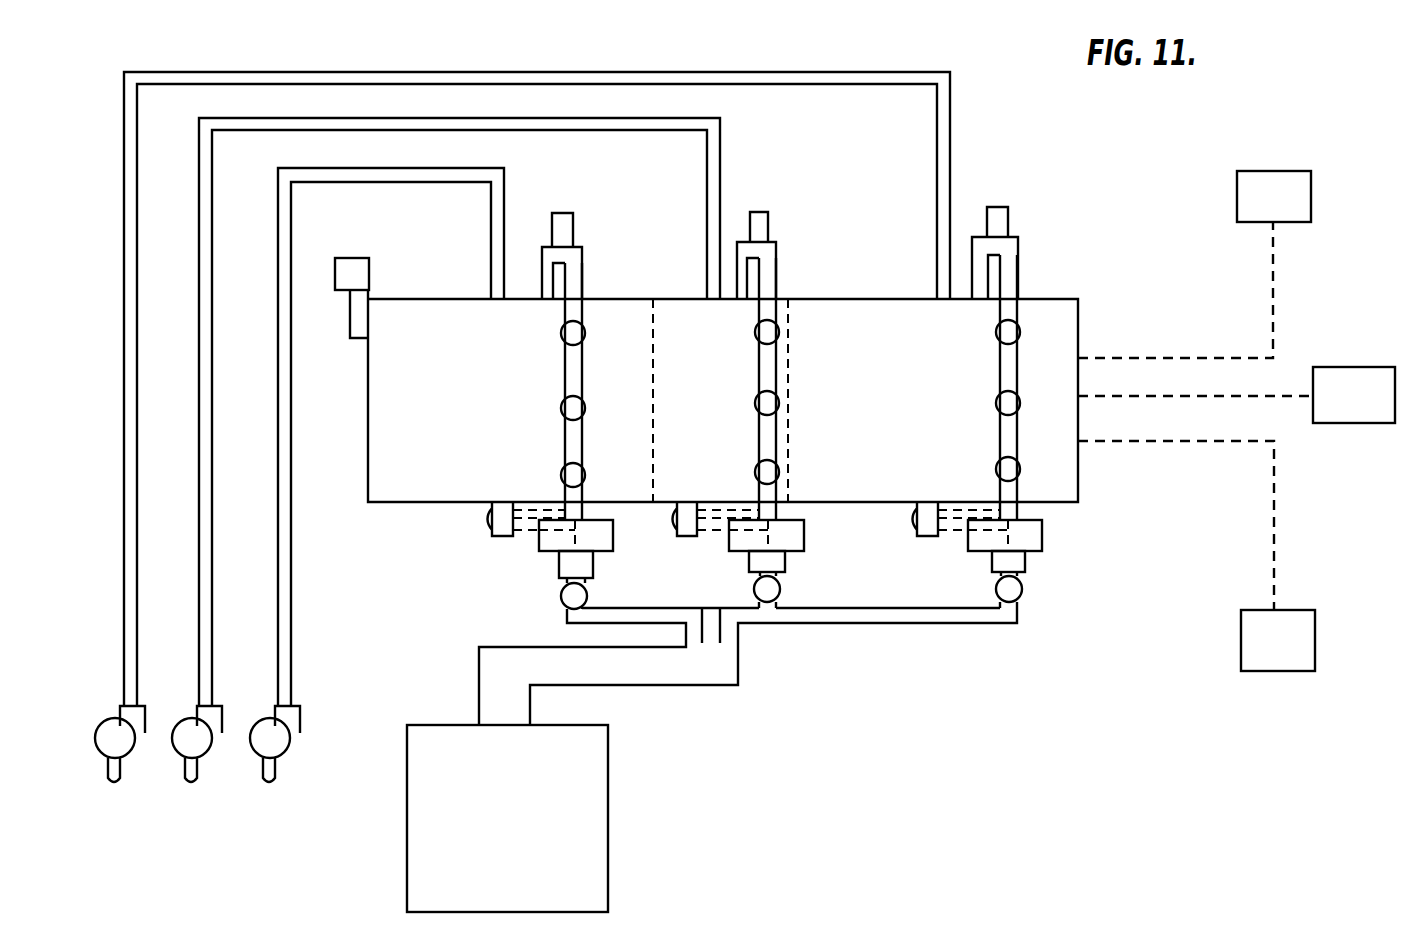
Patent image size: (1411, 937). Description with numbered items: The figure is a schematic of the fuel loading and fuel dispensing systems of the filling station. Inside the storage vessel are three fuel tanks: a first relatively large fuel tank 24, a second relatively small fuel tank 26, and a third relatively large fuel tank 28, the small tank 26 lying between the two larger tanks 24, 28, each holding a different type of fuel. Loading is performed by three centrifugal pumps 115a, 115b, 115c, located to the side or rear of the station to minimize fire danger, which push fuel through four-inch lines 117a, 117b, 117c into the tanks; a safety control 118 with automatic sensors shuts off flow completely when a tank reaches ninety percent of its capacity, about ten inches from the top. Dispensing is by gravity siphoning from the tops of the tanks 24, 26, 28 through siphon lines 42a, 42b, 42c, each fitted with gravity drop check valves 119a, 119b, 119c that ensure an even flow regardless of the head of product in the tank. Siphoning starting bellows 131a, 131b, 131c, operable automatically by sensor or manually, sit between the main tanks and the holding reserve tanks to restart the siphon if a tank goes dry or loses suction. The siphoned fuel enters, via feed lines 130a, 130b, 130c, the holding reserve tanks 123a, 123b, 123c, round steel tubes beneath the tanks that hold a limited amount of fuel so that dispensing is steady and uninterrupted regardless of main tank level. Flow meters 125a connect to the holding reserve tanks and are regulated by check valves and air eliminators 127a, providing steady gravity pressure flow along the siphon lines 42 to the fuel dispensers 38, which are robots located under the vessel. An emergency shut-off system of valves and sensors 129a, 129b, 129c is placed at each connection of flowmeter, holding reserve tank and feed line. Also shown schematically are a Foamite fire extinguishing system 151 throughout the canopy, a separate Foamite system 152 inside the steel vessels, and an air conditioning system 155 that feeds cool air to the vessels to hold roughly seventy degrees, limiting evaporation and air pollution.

The first relatively large fuel tank 24 is at (1046, 313).
The second relatively small fuel tank 26 is at (681, 322).
The third relatively large fuel tank 28 is at (465, 462).
The fuel dispensers 38 is at (590, 822).
The siphon lines 42 is at (647, 676).
The siphon line 42a is at (566, 373).
The siphon line 42b is at (741, 380).
The siphon line 42c is at (1012, 381).
The centrifugal pump 115a is at (105, 737).
The centrifugal pump 115b is at (200, 745).
The centrifugal pump 115c is at (280, 745).
The 4-inch line 117a is at (127, 437).
The 4-inch line 117b is at (205, 482).
The 4-inch line 117c is at (290, 638).
The safety control 118 is at (359, 278).
The gravity drop check valve 119a is at (562, 337).
The gravity drop check valve 119b is at (780, 332).
The gravity drop check valve 119c is at (996, 333).
The holding reserve tank 123a is at (548, 543).
The holding reserve tank 123b is at (728, 537).
The holding reserve tank 123c is at (968, 538).
The flow meter 125a is at (560, 566).
The check valves and air eliminators 127a is at (560, 597).
The emergency shut-off valve and sensor 129a is at (495, 505).
The emergency shut-off valve and sensor 129b is at (667, 505).
The emergency shut-off valve and sensor 129c is at (893, 505).
The feed line 130a is at (585, 507).
The feed line 130b is at (770, 497).
The feed line 130c is at (1018, 503).
The siphoning starting bellows 131a is at (562, 228).
The siphoning starting bellows 131b is at (760, 230).
The siphoning starting bellows 131c is at (996, 220).
The Foamite fire extinguishing system 151 is at (1311, 204).
The Foamite system 152 is at (1354, 395).
The air conditioning system 155 is at (1318, 648).